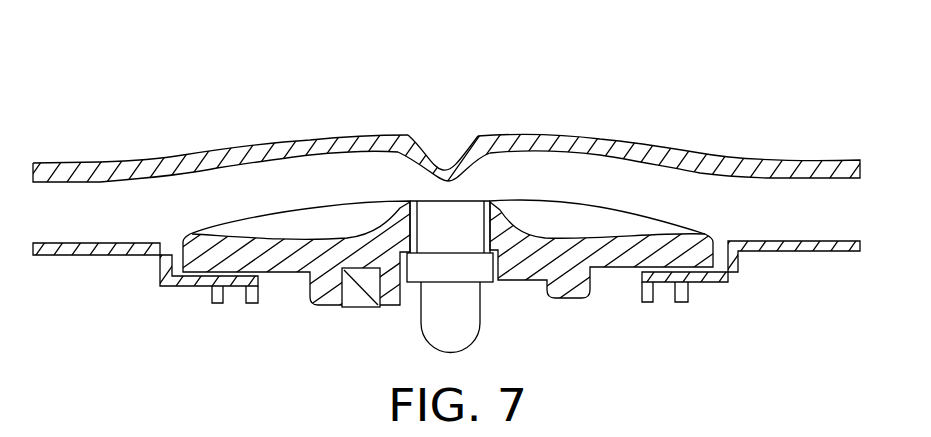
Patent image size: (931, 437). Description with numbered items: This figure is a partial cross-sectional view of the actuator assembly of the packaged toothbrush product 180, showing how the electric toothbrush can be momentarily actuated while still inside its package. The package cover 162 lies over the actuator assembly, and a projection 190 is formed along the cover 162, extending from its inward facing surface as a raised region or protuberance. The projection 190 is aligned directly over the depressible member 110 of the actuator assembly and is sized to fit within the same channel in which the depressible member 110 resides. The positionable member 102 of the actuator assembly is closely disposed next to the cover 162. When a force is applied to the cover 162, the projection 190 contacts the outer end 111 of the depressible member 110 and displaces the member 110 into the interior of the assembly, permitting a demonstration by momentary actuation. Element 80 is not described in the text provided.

The packaged toothbrush product 180 is at (730, 95).
The cover 162 is at (108, 172).
The projection 190 is at (433, 154).
The positionable member 102 is at (213, 250).
The depressible member 110 is at (453, 228).
The outer end 111 is at (430, 212).
The mounting plate 80 is at (827, 252).